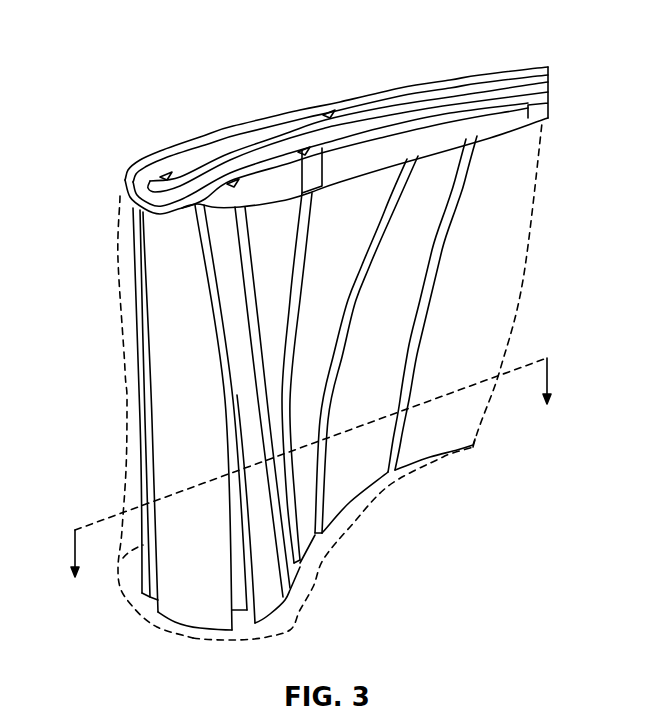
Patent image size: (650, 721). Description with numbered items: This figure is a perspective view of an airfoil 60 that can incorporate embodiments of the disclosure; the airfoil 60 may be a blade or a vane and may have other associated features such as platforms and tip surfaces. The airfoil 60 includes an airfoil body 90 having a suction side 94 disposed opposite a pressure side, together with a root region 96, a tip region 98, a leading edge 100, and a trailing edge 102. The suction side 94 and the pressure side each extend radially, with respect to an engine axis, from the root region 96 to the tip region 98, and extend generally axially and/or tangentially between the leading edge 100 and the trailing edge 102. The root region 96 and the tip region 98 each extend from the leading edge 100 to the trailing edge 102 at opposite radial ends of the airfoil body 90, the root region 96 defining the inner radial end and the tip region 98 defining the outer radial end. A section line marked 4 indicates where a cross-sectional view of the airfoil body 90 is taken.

The airfoil 60 is at (107, 383).
The airfoil body 90 is at (333, 603).
The suction side 94 is at (272, 118).
The root region 96 is at (400, 483).
The tip region 98 is at (403, 84).
The leading edge 100 is at (120, 453).
The trailing edge 102 is at (523, 287).
The section line 4- 4 is at (311, 484).